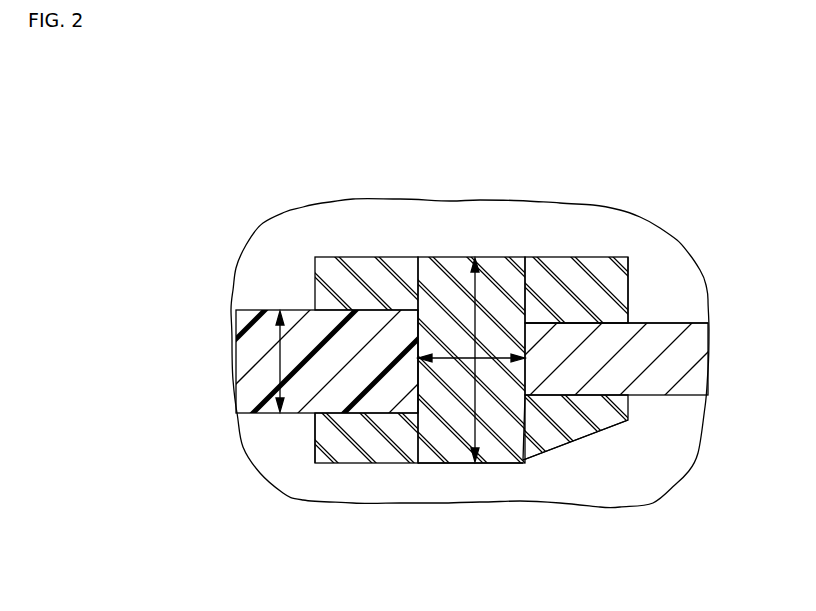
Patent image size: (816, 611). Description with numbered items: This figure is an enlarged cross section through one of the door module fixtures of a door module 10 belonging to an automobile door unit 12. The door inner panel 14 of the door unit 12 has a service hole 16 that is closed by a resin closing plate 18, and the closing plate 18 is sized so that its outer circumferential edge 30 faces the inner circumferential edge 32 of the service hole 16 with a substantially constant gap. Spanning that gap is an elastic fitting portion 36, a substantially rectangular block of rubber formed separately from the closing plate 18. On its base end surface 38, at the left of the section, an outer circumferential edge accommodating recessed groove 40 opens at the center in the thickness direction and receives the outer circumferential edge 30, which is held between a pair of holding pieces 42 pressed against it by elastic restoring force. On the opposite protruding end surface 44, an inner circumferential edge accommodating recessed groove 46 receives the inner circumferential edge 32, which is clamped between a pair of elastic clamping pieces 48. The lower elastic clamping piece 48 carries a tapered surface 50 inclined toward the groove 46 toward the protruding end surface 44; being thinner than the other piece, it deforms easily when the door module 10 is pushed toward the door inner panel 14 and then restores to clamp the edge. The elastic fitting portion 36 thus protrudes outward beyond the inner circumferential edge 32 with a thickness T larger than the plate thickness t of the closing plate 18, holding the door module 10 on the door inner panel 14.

The door module 10 is at (300, 230).
The door unit 12 is at (481, 175).
The door inner panel 14 is at (660, 338).
The service hole 16 is at (511, 405).
The closing plate 18 is at (250, 348).
The outer circumferential edge 30 is at (394, 295).
The inner circumferential edge 32 is at (540, 316).
The elastic fitting portion 36 is at (448, 280).
The base end surface 38 is at (313, 437).
The outer circumferential edge accommodating recessed groove 40 is at (418, 368).
The holding piece 42 is at (356, 292).
The protruding end surface 44 is at (627, 289).
The inner circumferential edge accommodating recessed groove 46 is at (511, 405).
The elastic clamping piece 48 is at (590, 282).
The tapered surface 50 is at (597, 413).
The thickness T is at (478, 291).
The plate thickness t is at (281, 362).